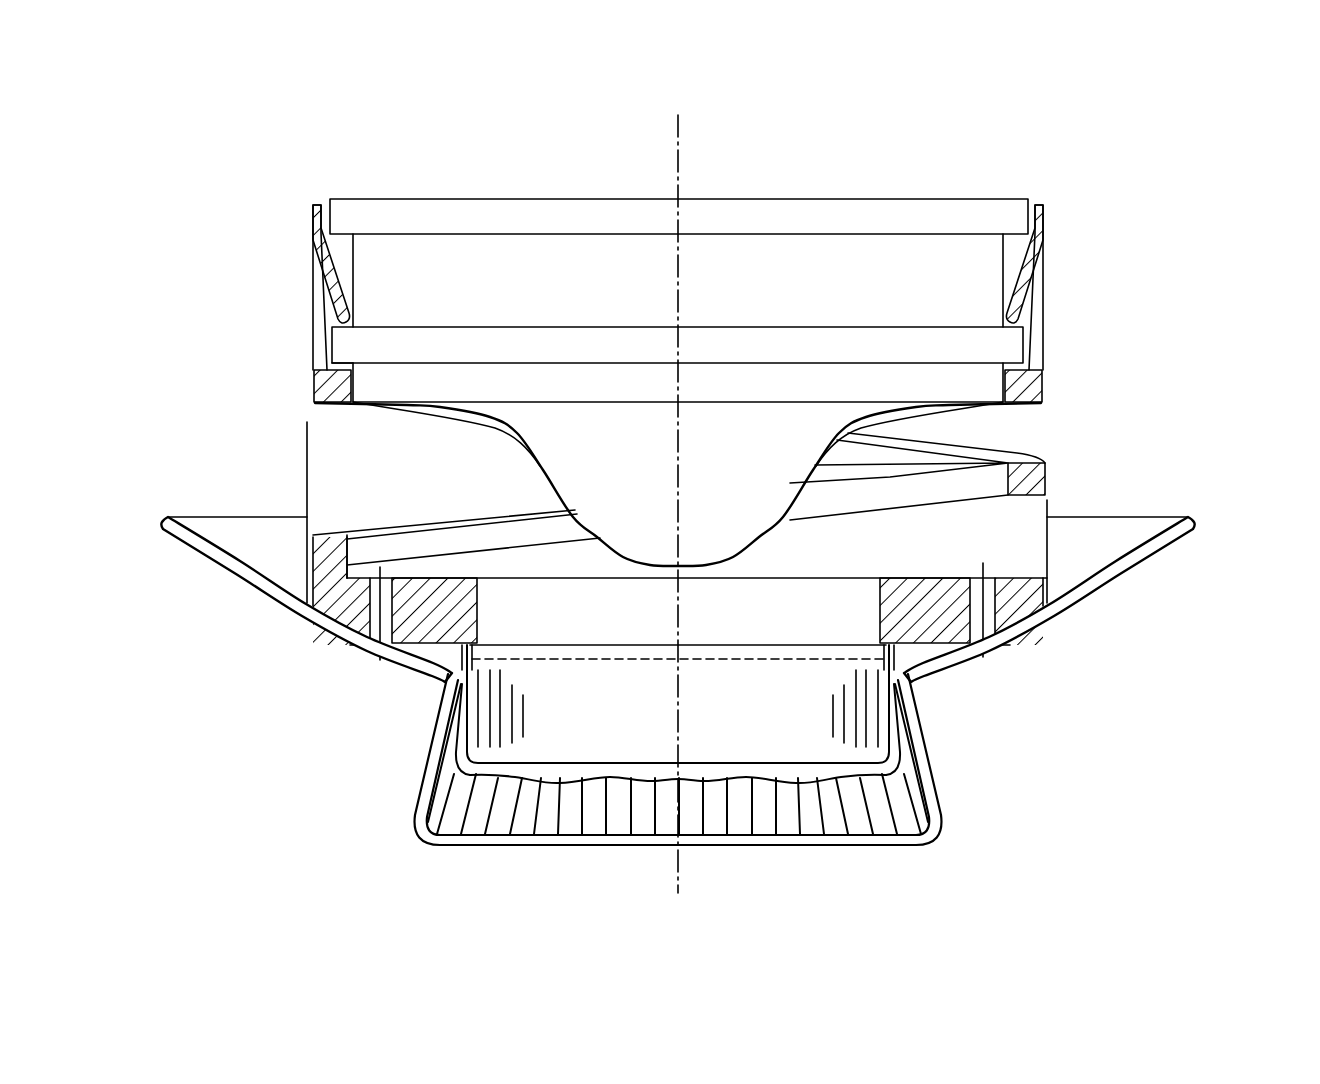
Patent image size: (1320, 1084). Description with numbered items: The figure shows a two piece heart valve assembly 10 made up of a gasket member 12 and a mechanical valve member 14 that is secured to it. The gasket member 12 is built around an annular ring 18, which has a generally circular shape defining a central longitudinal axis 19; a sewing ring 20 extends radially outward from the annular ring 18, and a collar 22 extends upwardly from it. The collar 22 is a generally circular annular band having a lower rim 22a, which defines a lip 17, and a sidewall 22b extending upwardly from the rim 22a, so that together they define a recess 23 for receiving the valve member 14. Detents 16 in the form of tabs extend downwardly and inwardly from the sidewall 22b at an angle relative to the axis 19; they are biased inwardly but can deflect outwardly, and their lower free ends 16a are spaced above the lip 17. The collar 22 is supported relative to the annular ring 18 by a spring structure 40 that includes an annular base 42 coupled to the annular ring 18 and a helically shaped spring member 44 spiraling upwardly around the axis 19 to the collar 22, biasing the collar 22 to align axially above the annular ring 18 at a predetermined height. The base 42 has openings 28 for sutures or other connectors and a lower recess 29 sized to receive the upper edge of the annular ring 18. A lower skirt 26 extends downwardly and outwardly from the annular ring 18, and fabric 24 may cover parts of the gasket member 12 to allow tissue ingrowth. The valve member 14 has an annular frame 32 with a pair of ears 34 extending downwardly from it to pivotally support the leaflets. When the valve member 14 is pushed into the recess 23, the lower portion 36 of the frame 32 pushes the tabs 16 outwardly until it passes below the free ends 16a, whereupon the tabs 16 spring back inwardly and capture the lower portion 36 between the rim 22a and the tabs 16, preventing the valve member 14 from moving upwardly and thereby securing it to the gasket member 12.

The heart valve assembly 10 is at (266, 120).
The gasket member 12 is at (1195, 432).
The valve member 14 is at (891, 179).
The detents 16 is at (323, 270).
The free ends 16a is at (1010, 305).
The lip 17 is at (343, 367).
The annular ring 18 is at (887, 767).
The central longitudinal axis 19 is at (681, 171).
The sewing ring 20 is at (217, 562).
The collar 22 is at (1050, 238).
The lower rim 22a is at (1046, 386).
The sidewall 22b is at (1040, 293).
The recess 23 is at (1014, 240).
The fabric 24 is at (428, 795).
The skirt 26 is at (917, 813).
The openings 28 is at (377, 623).
The lower recess 29 is at (440, 672).
The annular frame 32 is at (935, 213).
The ears 34 is at (577, 453).
The lower portion 36 is at (1010, 345).
The spring structure 40 is at (1025, 438).
The annular base 42 is at (307, 608).
The spring member 44 is at (1046, 492).